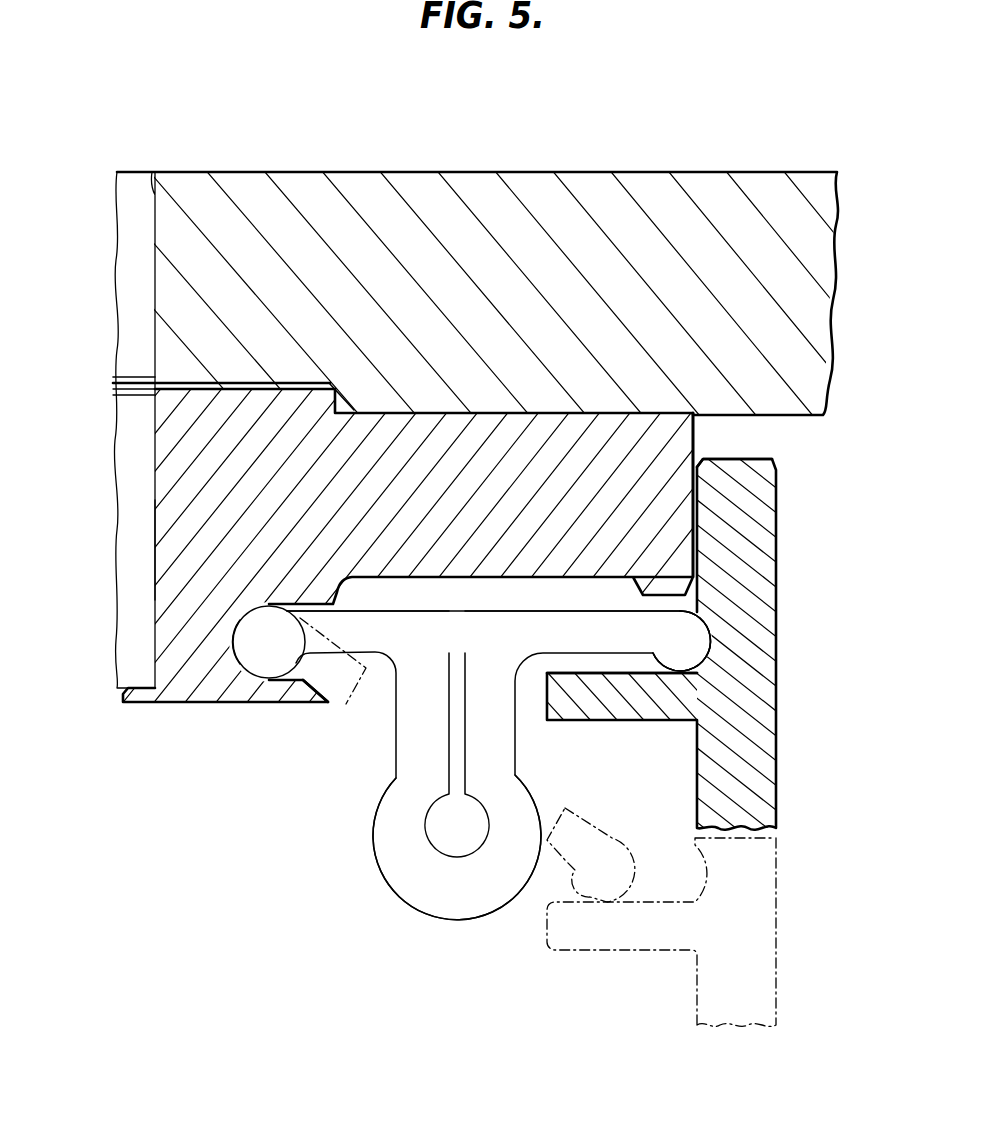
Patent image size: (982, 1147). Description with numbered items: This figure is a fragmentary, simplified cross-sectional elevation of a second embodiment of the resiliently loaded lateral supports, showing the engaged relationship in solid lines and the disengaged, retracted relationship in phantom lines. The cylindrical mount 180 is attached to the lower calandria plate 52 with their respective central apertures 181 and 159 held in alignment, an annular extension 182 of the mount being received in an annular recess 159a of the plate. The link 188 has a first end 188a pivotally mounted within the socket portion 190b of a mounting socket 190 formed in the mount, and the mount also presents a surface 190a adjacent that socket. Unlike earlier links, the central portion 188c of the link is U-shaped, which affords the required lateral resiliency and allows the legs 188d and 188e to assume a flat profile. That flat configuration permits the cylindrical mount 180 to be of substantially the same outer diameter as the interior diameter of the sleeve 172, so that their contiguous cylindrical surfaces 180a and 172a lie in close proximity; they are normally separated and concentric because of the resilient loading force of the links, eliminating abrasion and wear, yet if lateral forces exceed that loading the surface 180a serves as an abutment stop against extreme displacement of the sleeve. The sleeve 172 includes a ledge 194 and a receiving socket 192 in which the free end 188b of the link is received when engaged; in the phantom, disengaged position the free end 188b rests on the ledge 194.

The lower calandria plate 52 is at (499, 307).
The central aperture 159 is at (152, 196).
The annular recess 159a is at (308, 390).
The annular extension 182 is at (318, 405).
The central aperture 181 is at (152, 546).
The cylindrical mount 180 is at (197, 712).
The cylindrical surface 180a is at (697, 497).
The sleeve 172 is at (780, 771).
The cylindrical surface 172a is at (699, 462).
The ledge 194 is at (597, 668).
The link 188 is at (587, 810).
The first end 188a is at (267, 660).
The free end 188b is at (688, 628).
The central portion 188c is at (476, 920).
The leg 188d is at (413, 628).
The leg 188e is at (507, 625).
The receiving socket 192 is at (705, 645).
The mounting socket 190 is at (336, 660).
The stop surface 190a is at (331, 691).
The socket portion 190b is at (243, 625).